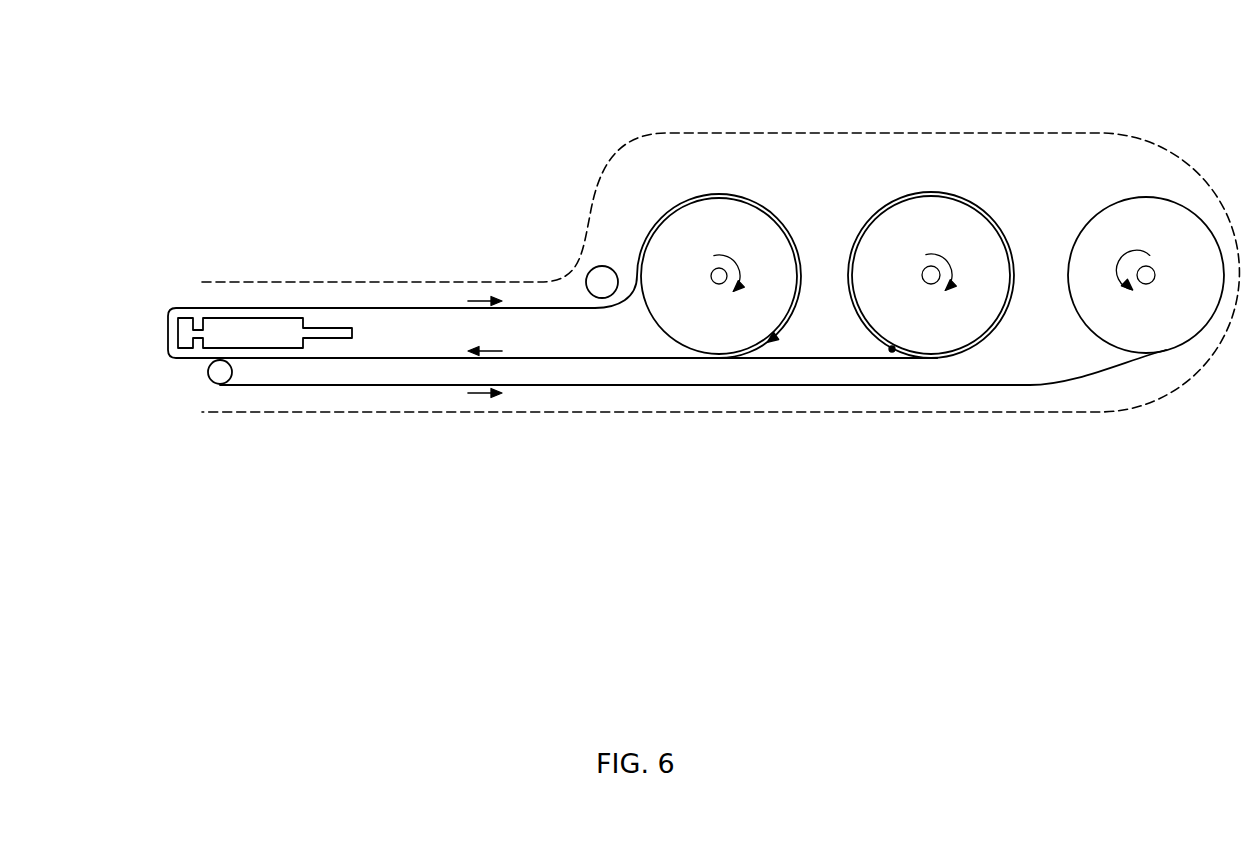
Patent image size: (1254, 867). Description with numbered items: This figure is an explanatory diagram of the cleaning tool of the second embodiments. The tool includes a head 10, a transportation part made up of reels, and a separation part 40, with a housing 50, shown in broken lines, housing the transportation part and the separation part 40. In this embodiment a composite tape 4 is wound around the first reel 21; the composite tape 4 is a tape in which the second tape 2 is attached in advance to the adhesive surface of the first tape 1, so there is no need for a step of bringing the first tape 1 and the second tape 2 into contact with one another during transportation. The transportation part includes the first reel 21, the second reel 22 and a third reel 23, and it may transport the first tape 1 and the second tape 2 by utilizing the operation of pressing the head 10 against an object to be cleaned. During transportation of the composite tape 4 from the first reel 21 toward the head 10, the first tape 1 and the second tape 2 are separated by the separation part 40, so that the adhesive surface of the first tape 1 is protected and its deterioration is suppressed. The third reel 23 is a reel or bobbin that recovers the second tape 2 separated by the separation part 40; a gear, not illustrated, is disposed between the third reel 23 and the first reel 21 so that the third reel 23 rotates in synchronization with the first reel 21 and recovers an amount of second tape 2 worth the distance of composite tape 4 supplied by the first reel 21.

The first tape 1 is at (384, 308).
The second tape 2 is at (694, 385).
The composite tape 4 is at (590, 358).
The head 10 is at (184, 320).
The first reel 21 is at (928, 220).
The second reel 22 is at (707, 220).
The third reel 23 is at (1144, 220).
The separation part 40 is at (219, 374).
The housing 50 is at (823, 133).